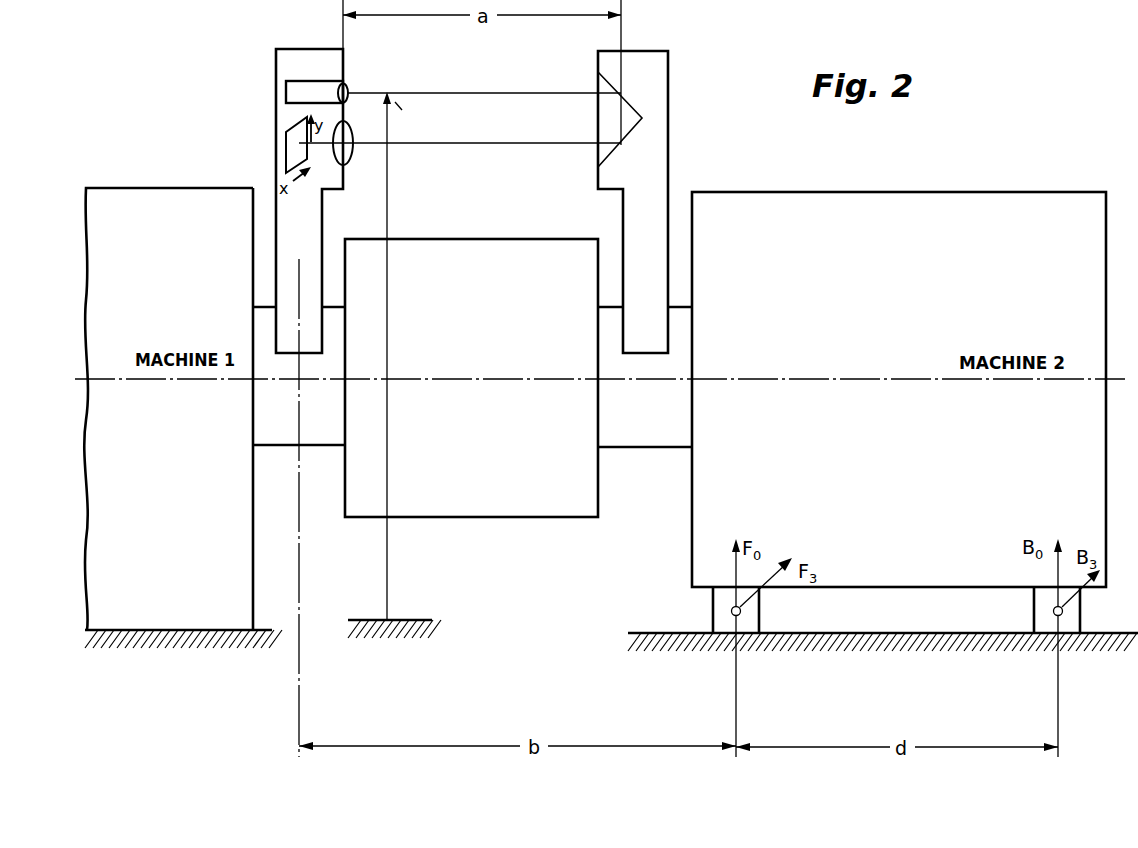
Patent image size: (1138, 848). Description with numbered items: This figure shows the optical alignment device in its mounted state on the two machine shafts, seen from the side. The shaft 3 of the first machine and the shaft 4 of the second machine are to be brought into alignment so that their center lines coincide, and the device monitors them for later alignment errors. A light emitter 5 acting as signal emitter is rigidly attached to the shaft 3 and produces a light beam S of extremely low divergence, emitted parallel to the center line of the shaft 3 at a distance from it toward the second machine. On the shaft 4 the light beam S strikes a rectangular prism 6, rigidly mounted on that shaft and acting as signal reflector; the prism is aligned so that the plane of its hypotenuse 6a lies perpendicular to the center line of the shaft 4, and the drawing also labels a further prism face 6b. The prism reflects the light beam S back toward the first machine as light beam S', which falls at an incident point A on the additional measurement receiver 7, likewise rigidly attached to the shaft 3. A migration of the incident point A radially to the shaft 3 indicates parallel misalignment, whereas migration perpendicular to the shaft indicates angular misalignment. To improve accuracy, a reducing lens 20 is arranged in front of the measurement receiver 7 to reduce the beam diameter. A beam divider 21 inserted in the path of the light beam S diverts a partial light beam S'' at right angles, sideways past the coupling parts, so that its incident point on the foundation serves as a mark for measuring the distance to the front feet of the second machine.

The shaft 3 is at (276, 430).
The shaft 4 is at (640, 427).
The light emitter 5 is at (297, 92).
The rectangular prism 6 is at (632, 100).
The hypotenuse 6a is at (598, 152).
The reflecting surface 6b is at (643, 118).
The additional measurement receiver 7 is at (310, 197).
The reducing lens 20 is at (350, 128).
The beam divider 21 is at (374, 81).
The incident point A is at (296, 143).
The light beam S is at (484, 75).
The light beam S' is at (460, 124).
The partial light beam S'' is at (414, 575).